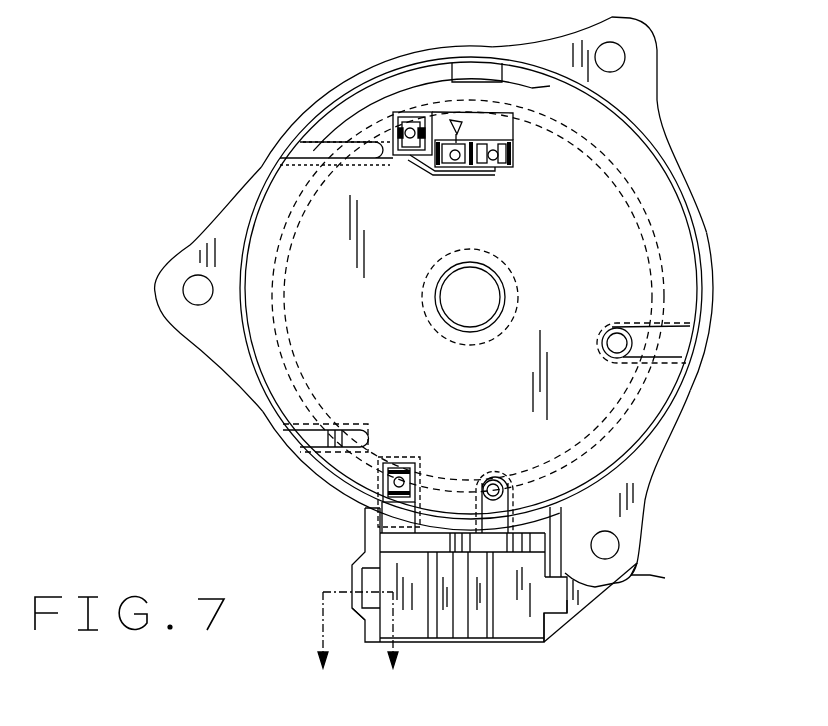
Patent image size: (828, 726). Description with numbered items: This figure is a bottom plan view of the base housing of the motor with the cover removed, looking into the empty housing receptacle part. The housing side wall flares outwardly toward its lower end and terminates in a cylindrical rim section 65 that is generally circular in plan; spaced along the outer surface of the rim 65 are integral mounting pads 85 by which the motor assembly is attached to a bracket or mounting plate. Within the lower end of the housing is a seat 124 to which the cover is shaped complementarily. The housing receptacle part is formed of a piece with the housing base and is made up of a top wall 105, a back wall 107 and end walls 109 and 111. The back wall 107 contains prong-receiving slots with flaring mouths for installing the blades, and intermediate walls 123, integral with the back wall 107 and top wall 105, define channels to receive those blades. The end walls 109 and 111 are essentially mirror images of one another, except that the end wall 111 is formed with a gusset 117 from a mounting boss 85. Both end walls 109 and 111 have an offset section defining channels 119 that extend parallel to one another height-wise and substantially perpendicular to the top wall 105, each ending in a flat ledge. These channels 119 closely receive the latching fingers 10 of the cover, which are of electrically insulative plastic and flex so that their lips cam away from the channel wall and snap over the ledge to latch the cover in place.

The cylindrical rim section 65 is at (706, 314).
The seat 124 is at (655, 446).
The mounting pads 85 is at (640, 568).
The back wall 107 is at (380, 511).
The top wall 105 is at (522, 630).
The intermediate walls 123 is at (492, 630).
The channels 119 is at (360, 586).
The end wall 111 is at (574, 611).
The gusset 117 is at (558, 633).
The end wall 109 is at (352, 616).
The fingers 10 is at (359, 643).